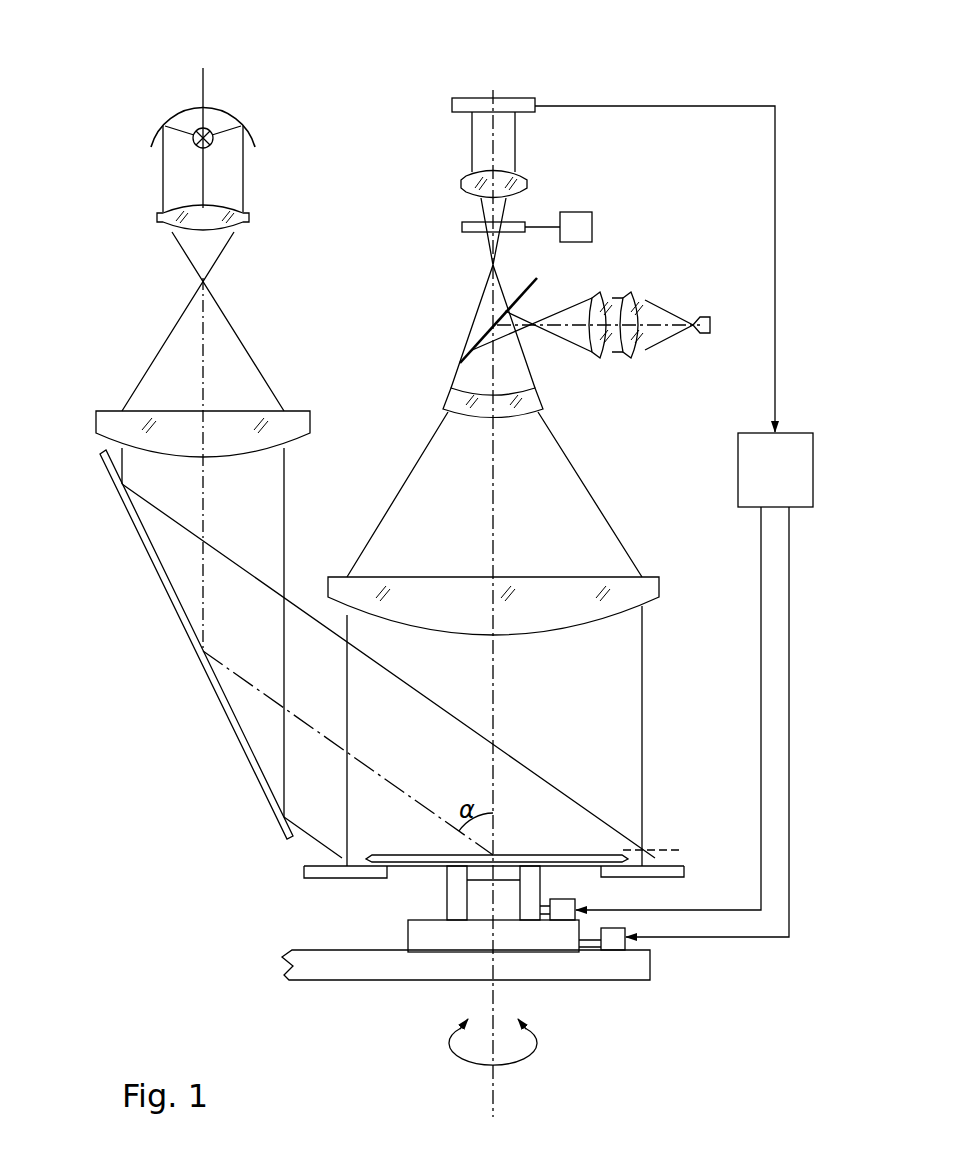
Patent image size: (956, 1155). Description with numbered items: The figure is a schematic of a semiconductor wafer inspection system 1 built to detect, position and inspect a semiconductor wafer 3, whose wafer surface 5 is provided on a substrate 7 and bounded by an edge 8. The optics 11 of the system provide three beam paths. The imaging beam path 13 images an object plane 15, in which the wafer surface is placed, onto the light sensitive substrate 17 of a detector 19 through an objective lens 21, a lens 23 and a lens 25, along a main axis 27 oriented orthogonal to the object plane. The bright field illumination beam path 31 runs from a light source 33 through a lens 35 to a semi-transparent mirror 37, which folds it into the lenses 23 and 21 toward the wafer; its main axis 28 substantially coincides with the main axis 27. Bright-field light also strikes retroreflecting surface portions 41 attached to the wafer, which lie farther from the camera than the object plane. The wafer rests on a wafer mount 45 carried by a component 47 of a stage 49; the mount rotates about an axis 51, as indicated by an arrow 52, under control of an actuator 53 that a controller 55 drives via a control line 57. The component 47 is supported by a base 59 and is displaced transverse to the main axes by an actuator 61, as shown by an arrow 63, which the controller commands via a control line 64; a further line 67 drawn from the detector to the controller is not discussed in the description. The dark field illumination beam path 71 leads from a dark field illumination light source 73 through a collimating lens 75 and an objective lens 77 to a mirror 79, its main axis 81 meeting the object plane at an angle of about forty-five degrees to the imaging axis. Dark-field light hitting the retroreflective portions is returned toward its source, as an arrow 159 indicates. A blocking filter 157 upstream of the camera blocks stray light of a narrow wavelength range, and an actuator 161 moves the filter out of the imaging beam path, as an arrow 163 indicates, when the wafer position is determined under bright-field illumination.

The semiconductor wafer inspection system 1 is at (730, 76).
The semiconductor wafer 3 is at (386, 820).
The wafer surface 5 is at (562, 855).
The substrate 7 is at (526, 855).
The edge 8 is at (372, 857).
The optics 11 is at (349, 156).
The imaging beam path 13 is at (618, 190).
The object plane 15 is at (673, 848).
The light sensitive substrate 17 is at (468, 118).
The detector 19 is at (452, 105).
The objective lens 21 is at (672, 583).
The lens 23 is at (440, 393).
The lens 25 is at (530, 185).
The main axis 27 is at (493, 655).
The main axis 28 is at (492, 704).
The bright field illumination beam path 31 is at (629, 420).
The light source 33 is at (700, 315).
The lens 35 is at (640, 278).
The semi-transparent mirror 37 is at (463, 366).
The retroreflecting surface portions 41 is at (318, 866).
The wafer mount 45 is at (447, 897).
The component 47 is at (408, 933).
The stage 49 is at (338, 1002).
The axis 51 is at (493, 1097).
The arrow 52 is at (537, 1040).
The actuator 53 is at (577, 901).
The controller 55 is at (763, 483).
The control line 57 is at (761, 720).
The base 59 is at (650, 971).
The actuator 61 is at (627, 943).
The arrow 63 is at (605, 917).
The control line 64 is at (789, 636).
The control line 67 is at (775, 212).
The dark field illumination beam path 71 is at (298, 315).
The dark field illumination light source 73 is at (180, 108).
The collimating lens 75 is at (157, 218).
The objective lens 77 is at (310, 420).
The mirror 79 is at (243, 712).
The main axis 81 is at (300, 720).
The blocking filter 157 is at (462, 227).
The arrow 159 is at (326, 858).
The actuator 161 is at (592, 228).
The arrow 163 is at (507, 247).